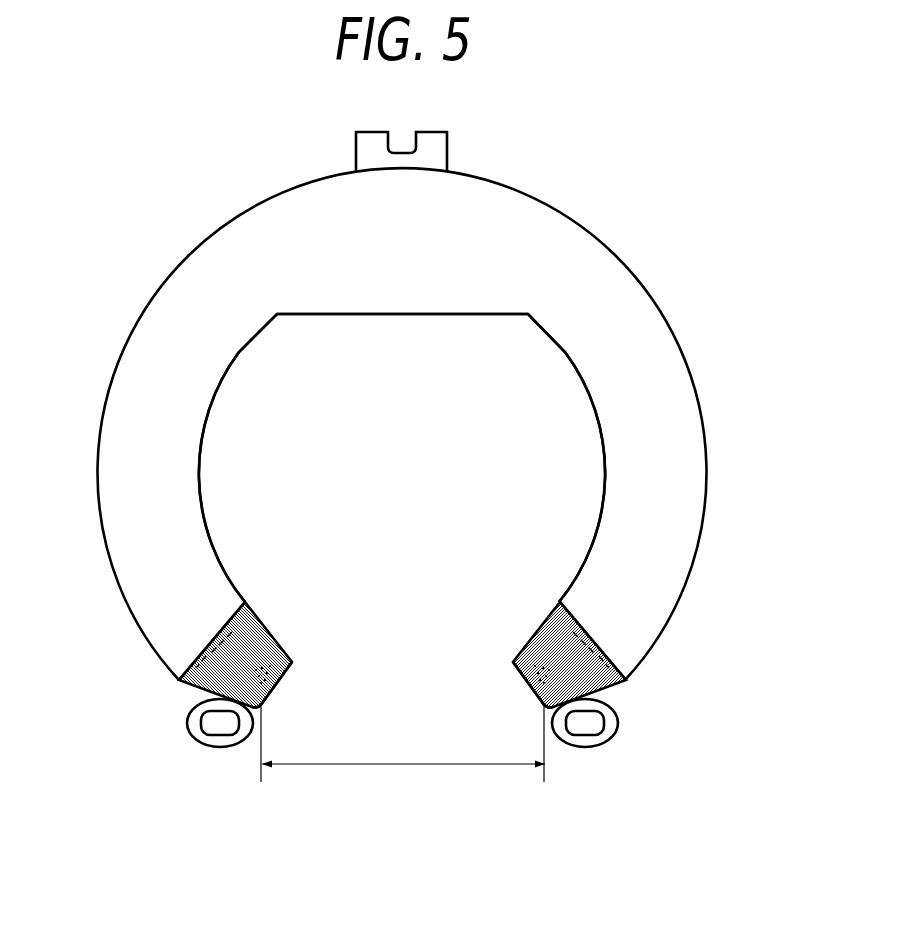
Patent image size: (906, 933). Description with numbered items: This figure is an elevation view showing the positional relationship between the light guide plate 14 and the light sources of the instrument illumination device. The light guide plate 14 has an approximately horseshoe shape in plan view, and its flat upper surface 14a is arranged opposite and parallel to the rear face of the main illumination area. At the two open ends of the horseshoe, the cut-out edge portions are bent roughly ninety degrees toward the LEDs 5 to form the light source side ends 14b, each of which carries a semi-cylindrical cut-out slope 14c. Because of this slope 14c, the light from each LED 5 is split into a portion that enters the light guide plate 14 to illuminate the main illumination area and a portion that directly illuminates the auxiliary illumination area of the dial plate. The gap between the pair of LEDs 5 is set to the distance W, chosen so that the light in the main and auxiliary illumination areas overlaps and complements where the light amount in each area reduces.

The light guide plate 14 is at (609, 246).
The flat upper surface 14a is at (646, 389).
The light source side end 14b is at (405, 674).
The cut-out slope 14c is at (402, 699).
The LED 5 is at (402, 665).
The gap between the pair of LEDs W is at (405, 767).